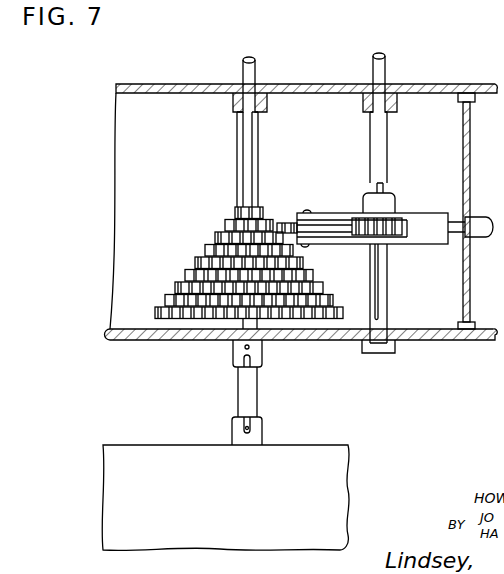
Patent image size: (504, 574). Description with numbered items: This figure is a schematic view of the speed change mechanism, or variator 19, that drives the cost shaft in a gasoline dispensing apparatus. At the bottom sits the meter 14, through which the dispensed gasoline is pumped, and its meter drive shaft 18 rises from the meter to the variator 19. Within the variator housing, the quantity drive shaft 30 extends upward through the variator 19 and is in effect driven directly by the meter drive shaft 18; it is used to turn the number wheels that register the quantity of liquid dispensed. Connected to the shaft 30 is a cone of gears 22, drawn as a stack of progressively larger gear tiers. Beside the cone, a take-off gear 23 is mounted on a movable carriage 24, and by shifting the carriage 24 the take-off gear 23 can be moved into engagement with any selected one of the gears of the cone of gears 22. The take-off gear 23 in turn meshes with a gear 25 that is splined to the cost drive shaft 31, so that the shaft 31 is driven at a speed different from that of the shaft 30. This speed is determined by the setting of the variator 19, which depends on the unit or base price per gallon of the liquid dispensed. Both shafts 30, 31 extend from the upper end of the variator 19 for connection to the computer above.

The meter 14 is at (344, 447).
The meter drive shaft 18 is at (258, 398).
The variator 19 is at (455, 341).
The cone of gears 22 is at (216, 240).
The take-off gear 23 is at (284, 222).
The movable carriage 24 is at (413, 213).
The gear 25 is at (402, 235).
The quantity drive shaft 30 is at (255, 74).
The cost drive shaft 31 is at (386, 73).